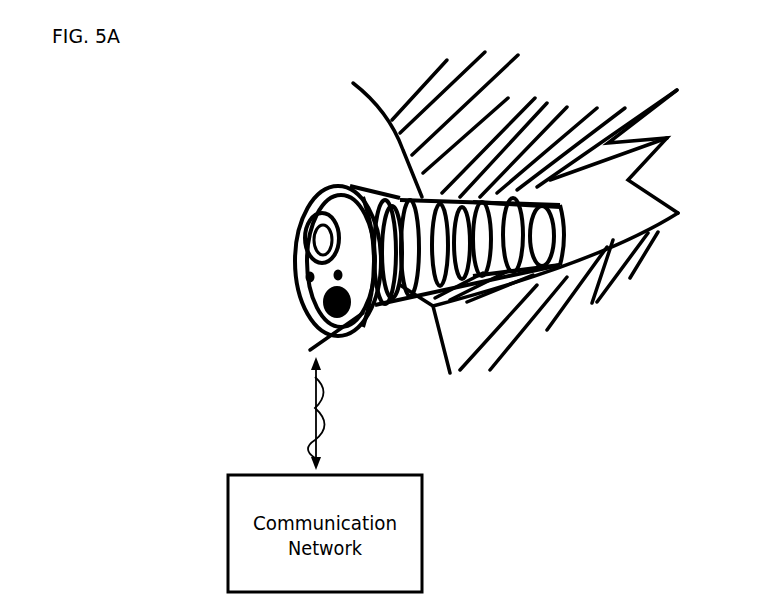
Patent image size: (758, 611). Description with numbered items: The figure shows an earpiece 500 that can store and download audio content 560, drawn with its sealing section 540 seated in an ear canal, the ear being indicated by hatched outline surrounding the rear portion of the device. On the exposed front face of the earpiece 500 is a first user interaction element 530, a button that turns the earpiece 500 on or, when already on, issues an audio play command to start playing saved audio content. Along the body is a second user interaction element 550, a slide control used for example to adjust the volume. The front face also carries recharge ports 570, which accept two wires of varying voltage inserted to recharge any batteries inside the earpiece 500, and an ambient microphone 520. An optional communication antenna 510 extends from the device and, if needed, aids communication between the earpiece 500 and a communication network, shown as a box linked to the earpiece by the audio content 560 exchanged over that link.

The earpiece 500 is at (166, 162).
The optional communication antenna 510 is at (320, 362).
The ambient microphone 520 is at (322, 303).
The first user interaction element 530 is at (316, 243).
The sealing section 540 is at (470, 197).
The second user interaction element 550 is at (387, 257).
The audio content 560 is at (316, 408).
The recharge ports 570 is at (336, 276).